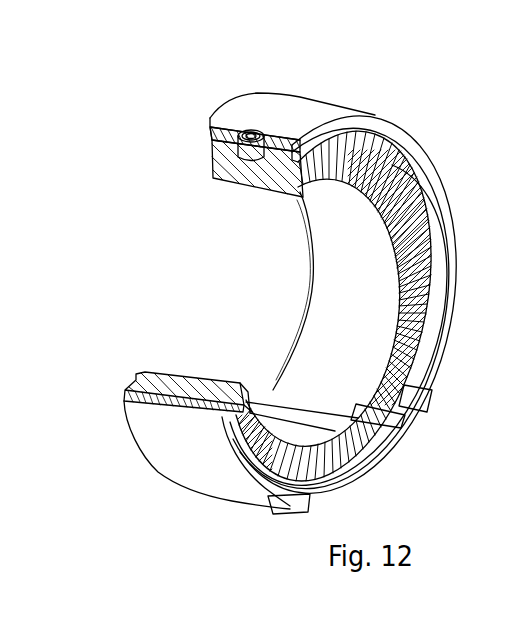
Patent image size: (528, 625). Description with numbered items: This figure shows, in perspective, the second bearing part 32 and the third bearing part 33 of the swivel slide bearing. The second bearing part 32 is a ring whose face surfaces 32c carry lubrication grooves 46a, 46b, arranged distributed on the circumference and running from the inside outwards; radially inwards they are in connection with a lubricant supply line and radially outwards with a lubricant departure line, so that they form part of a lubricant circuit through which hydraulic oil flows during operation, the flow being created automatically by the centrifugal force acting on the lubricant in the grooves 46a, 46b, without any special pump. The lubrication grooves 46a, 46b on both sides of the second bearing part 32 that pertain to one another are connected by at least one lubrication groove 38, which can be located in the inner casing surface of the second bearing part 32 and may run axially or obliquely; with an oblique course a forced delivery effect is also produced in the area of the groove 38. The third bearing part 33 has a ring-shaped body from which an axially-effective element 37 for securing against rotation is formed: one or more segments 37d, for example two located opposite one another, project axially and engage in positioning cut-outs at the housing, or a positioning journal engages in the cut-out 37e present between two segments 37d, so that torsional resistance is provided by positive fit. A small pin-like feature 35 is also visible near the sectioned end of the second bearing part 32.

The second bearing part 32 is at (320, 278).
The face surfaces 32c is at (212, 146).
The third bearing part 33 is at (275, 110).
The pin 35 is at (243, 130).
The axially-effective element for securing against rotation 37 is at (380, 112).
The segments 37d is at (410, 136).
The cut-out 37e is at (322, 130).
The lubrication groove 38 is at (266, 405).
The lubrication groove 46a is at (212, 160).
The lubrication groove 46b is at (424, 390).